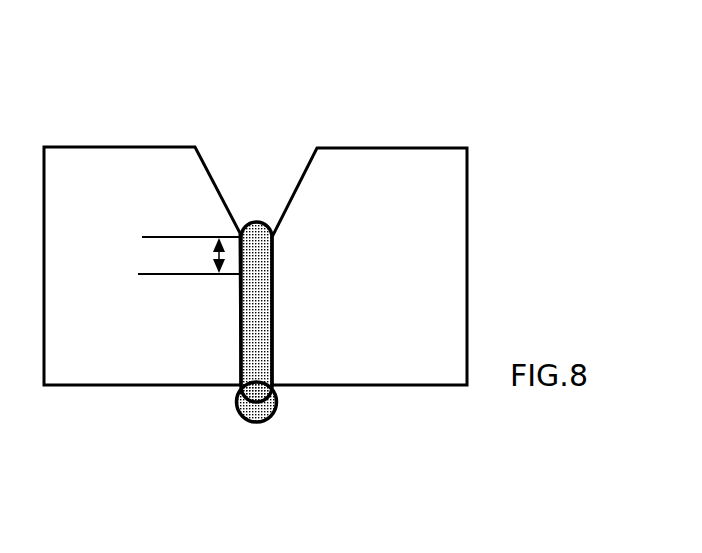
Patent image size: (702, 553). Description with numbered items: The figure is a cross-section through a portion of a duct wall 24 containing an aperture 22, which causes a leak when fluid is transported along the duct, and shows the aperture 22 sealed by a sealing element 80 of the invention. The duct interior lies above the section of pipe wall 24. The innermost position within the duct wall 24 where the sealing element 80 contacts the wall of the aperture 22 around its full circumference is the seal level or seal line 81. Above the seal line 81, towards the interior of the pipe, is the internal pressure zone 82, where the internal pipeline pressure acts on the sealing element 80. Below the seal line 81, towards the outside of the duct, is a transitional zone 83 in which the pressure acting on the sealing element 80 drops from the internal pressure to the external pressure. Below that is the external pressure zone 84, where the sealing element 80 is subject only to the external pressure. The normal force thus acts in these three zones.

The aperture 22 is at (267, 166).
The duct wall 24 is at (467, 315).
The sealing element 80 is at (241, 419).
The seal line 81 is at (272, 237).
The internal pressure zone 82 is at (196, 227).
The transitional zone 83 is at (192, 269).
The external pressure zone 84 is at (188, 312).